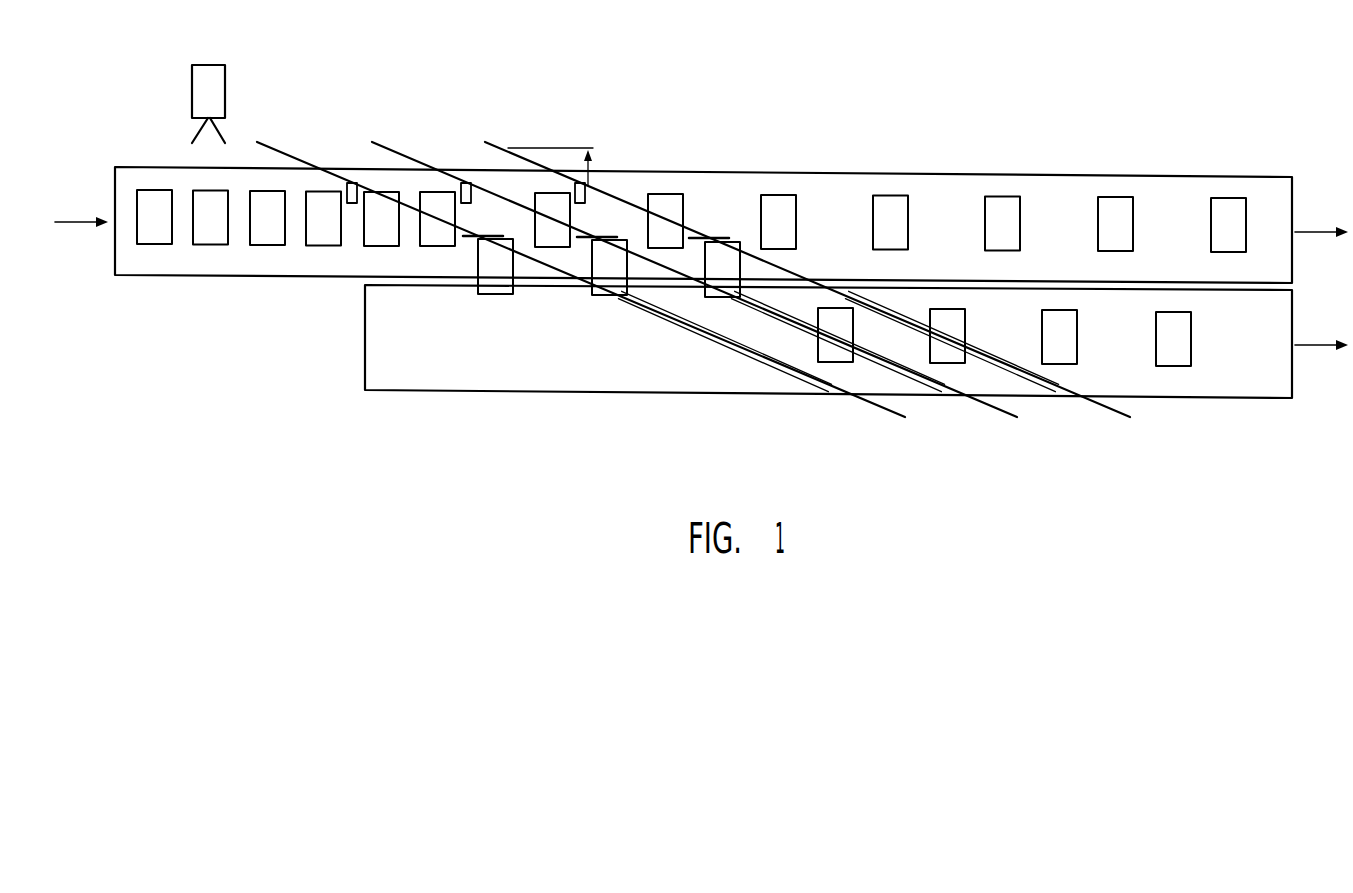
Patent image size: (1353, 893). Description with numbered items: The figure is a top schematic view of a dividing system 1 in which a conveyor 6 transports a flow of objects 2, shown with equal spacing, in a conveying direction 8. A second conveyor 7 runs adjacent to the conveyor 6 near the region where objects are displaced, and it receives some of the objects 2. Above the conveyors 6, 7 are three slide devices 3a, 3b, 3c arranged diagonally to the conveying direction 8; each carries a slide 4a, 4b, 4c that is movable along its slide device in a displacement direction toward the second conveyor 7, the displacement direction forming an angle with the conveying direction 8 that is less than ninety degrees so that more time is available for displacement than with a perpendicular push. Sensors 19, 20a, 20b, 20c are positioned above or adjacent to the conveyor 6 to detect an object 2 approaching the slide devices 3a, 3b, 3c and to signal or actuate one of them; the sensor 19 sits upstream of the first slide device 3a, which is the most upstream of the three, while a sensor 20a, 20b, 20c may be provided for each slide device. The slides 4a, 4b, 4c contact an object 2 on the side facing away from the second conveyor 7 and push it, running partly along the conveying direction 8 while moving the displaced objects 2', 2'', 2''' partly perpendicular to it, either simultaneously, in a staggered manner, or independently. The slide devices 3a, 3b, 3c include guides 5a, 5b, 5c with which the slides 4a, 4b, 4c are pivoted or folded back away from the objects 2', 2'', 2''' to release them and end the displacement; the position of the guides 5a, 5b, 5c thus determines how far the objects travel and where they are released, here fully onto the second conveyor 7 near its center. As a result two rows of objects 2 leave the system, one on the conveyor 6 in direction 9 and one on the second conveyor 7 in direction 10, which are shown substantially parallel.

The apparatus for conveying and sorting articles 1 is at (781, 87).
The object 2 is at (691, 241).
The displaced object 2' is at (495, 341).
The displaced object 2'' is at (609, 342).
The displaced object 2''' is at (722, 343).
The slide device 3a is at (277, 141).
The slide device 3b is at (390, 142).
The slide device 3c is at (502, 142).
The slide 4a is at (491, 236).
The slide 4b is at (611, 237).
The slide 4c is at (721, 241).
The guide 5a is at (823, 388).
The guide 5b is at (937, 388).
The guide 5c is at (1048, 388).
The conveyor 6 is at (220, 278).
The second conveyor 7 is at (410, 393).
The direction 8 is at (73, 221).
The direction 9 is at (1316, 231).
The direction 10 is at (1317, 344).
The sensor 19 is at (192, 80).
The sensor 20a is at (349, 182).
The sensor 20b is at (464, 182).
The sensor 20c is at (579, 182).